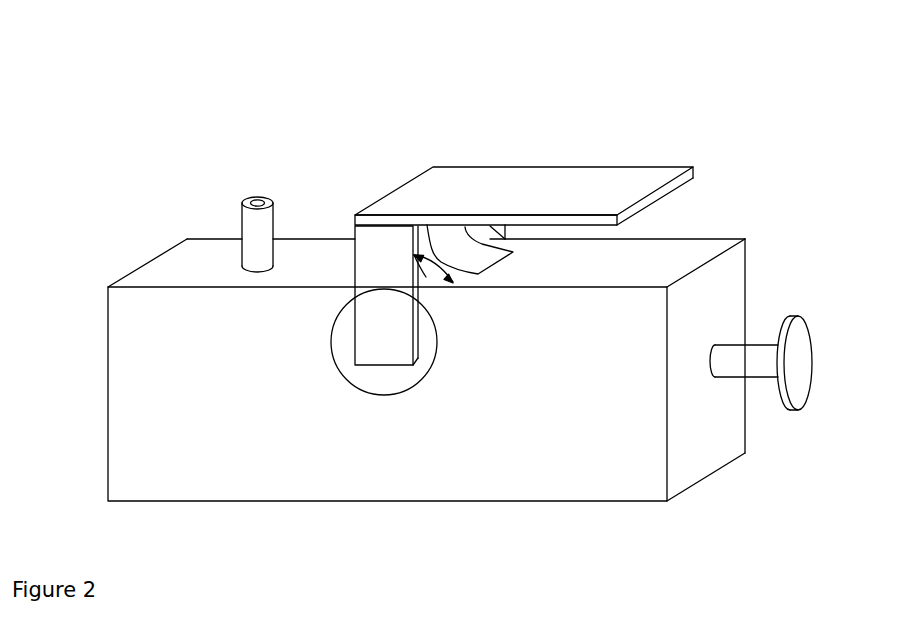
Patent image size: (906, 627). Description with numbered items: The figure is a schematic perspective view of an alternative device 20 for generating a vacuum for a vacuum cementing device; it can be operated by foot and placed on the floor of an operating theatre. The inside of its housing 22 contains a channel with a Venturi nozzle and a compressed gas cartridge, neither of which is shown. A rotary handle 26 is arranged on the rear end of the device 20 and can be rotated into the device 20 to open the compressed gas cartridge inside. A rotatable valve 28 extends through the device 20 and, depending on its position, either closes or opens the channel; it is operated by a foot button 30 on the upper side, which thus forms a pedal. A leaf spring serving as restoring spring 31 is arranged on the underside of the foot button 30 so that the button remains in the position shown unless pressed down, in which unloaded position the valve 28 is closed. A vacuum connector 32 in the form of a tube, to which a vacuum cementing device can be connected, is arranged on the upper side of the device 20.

The device 20 is at (115, 72).
The housing 22 is at (579, 364).
The rotary handle 26 is at (788, 314).
The rotatable valve 28 is at (343, 327).
The foot button 30 is at (483, 178).
The restoring spring 31 is at (460, 238).
The vacuum connector 32 is at (248, 190).